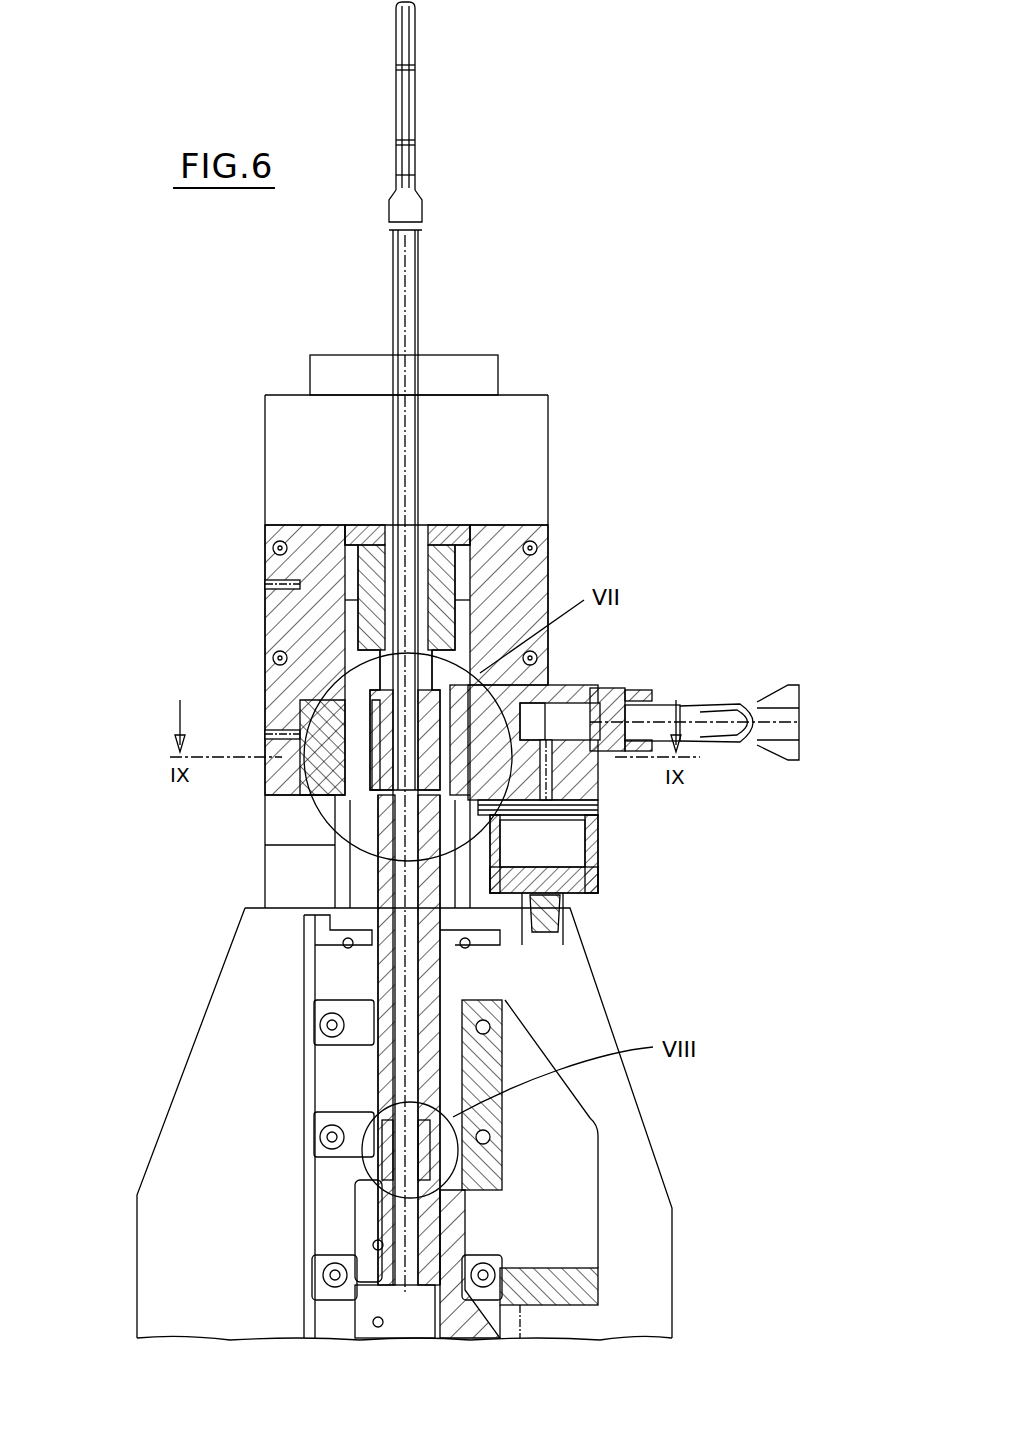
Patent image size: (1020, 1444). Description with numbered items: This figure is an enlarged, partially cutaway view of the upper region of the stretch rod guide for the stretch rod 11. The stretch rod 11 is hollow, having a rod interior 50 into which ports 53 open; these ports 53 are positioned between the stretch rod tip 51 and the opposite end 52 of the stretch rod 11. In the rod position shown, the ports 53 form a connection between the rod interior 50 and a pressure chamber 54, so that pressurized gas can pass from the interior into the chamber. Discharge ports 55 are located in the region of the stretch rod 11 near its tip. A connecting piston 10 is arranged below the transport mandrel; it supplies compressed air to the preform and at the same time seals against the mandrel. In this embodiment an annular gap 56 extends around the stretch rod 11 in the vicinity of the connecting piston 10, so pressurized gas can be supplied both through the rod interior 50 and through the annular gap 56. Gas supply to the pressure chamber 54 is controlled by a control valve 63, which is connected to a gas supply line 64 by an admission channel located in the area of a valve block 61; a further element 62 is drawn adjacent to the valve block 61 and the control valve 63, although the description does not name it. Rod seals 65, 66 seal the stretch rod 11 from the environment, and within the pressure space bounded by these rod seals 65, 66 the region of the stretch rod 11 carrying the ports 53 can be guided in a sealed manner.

The connecting piston 10 is at (470, 540).
The stretch rod 11 is at (420, 300).
The rod interior 50 is at (415, 452).
The stretch rod tip 51 is at (412, 4).
The opposite end 52 is at (393, 1267).
The ports 53 is at (350, 777).
The pressure chamber 54 is at (305, 700).
The discharge ports 55 is at (412, 68).
The annular gap 56 is at (425, 512).
The valve block 61 is at (595, 770).
The plate 62 is at (600, 800).
The control valve 63 is at (600, 840).
The gas supply line 64 is at (687, 712).
The rod seal 65 is at (365, 612).
The rod seal 66 is at (380, 1120).